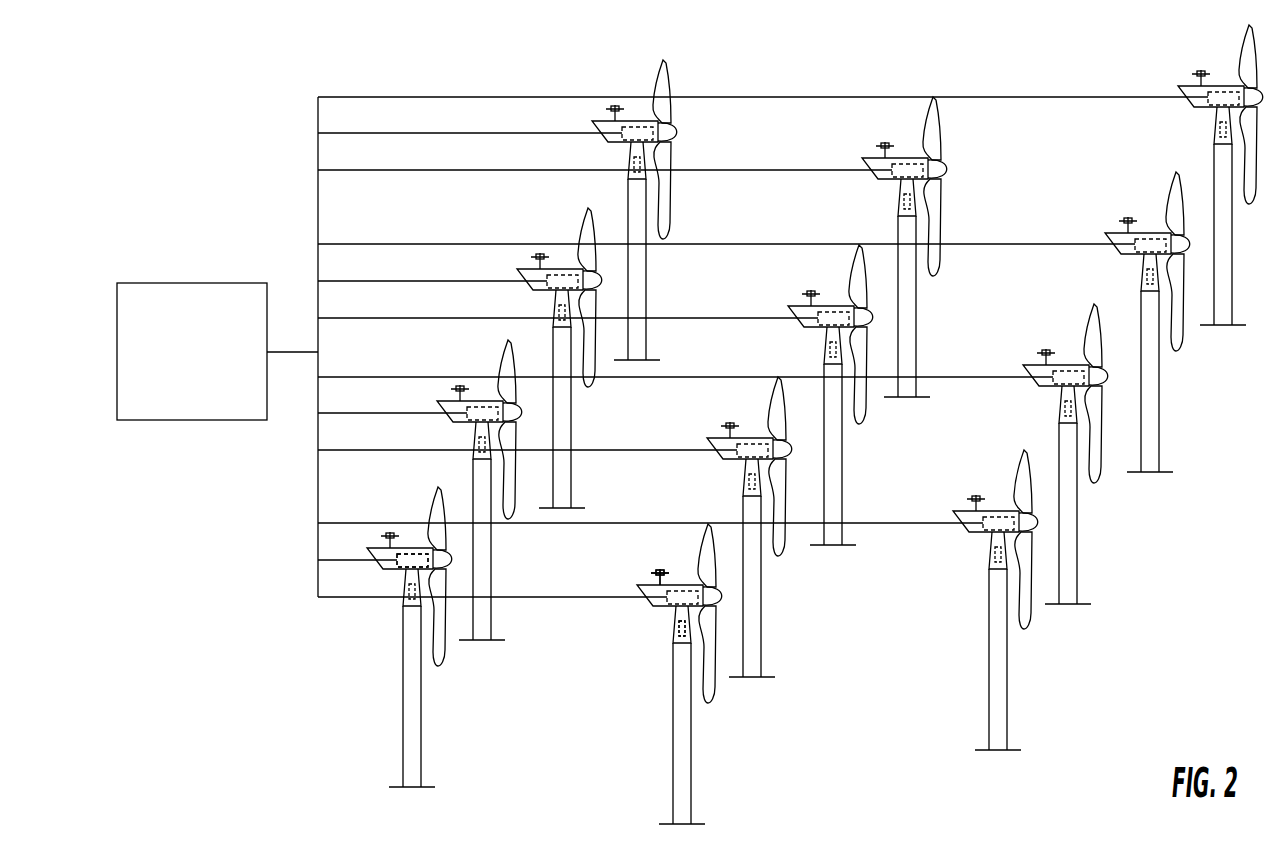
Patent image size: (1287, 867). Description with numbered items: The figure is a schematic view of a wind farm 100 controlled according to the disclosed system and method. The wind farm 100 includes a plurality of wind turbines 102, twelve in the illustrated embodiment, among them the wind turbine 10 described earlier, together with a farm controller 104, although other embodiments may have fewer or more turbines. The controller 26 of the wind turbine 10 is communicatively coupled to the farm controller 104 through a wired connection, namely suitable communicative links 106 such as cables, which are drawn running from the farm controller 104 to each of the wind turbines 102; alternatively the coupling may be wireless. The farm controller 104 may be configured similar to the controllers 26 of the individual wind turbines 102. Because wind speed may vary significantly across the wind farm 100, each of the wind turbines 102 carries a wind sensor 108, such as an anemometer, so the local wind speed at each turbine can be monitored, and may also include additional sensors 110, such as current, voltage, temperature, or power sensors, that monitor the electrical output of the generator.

The wind farm 100 is at (226, 155).
The wind turbine 10 is at (380, 632).
The wind turbines 102 is at (764, 582).
The farm controller 104 is at (208, 359).
The communicative links 106 is at (458, 244).
The wind sensor 108 is at (656, 573).
The additional sensors 110 is at (673, 630).
The controller 26 is at (414, 553).